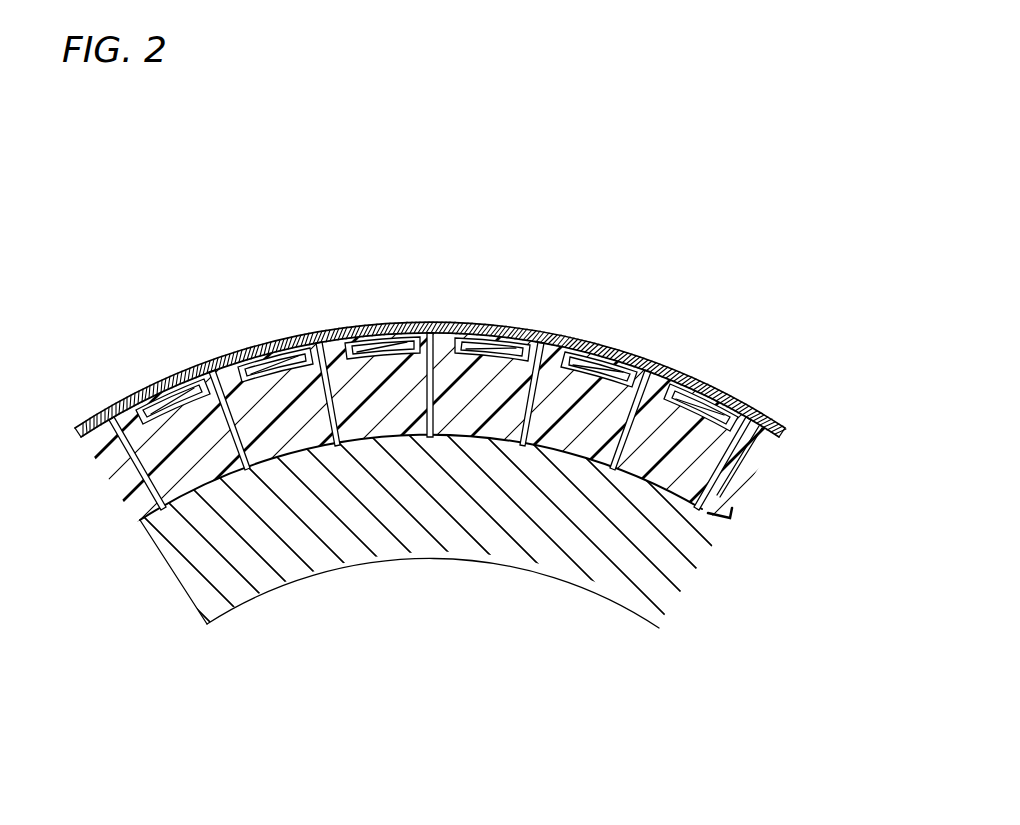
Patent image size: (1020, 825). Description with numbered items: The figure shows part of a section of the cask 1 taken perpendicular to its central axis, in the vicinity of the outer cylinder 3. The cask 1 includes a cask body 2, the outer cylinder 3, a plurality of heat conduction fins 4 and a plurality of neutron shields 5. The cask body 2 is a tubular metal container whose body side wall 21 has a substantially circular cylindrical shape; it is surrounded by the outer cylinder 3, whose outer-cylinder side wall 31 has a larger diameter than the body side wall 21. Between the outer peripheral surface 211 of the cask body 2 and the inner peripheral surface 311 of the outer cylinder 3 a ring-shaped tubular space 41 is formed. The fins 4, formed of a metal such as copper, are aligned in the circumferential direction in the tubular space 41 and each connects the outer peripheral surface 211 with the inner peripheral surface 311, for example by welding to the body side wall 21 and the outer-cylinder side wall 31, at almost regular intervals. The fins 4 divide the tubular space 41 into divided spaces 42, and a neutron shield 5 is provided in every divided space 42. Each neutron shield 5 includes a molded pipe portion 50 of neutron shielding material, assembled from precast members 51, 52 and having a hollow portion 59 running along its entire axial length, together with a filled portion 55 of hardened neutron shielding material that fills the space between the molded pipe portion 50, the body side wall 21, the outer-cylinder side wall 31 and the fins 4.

The cask 1 is at (382, 149).
The cask body 2 is at (576, 655).
The body side wall 21 is at (603, 552).
The outer peripheral surface 211 is at (705, 487).
The outer cylinder 3 is at (671, 290).
The outer-cylinder side wall 31 is at (657, 367).
The inner peripheral surface 311 is at (745, 465).
The fin 4 is at (285, 445).
The tubular space 41 is at (150, 455).
The divided space 42 is at (193, 462).
The neutron shield 5 is at (207, 218).
The molded pipe portion 50 is at (247, 290).
The precast member 51 is at (243, 353).
The precast member 52 is at (293, 355).
The filled portion 55 is at (212, 368).
The hollow portion 59 is at (267, 356).